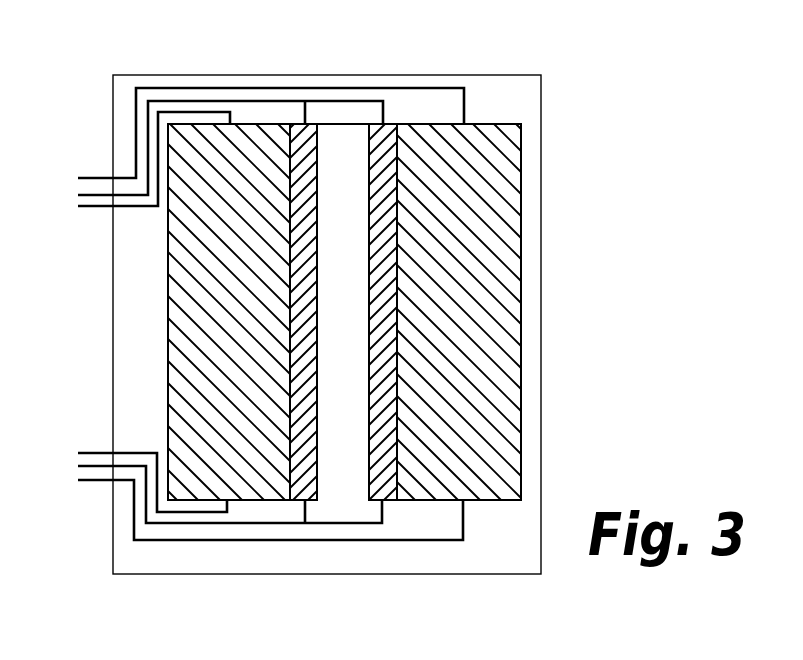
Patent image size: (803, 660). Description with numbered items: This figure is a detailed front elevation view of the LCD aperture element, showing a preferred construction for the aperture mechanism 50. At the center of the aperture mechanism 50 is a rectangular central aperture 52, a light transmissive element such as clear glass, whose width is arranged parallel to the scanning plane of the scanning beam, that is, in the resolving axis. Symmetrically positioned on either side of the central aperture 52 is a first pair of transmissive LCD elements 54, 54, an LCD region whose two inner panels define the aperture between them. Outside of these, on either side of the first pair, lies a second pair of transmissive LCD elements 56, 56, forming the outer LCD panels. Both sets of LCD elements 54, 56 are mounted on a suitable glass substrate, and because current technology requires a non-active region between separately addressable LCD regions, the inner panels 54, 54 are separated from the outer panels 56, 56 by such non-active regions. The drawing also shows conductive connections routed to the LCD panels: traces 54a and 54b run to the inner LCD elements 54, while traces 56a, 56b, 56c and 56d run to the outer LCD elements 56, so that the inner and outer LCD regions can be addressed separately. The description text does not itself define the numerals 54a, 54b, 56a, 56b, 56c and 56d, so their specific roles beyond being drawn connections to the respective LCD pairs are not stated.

The aperture mechanism 50 is at (560, 141).
The central aperture 52 is at (361, 305).
The first pair of transmissive LCD elements 54 is at (380, 204).
The electrode lead trace 54a is at (84, 469).
The electrode lead trace 54b is at (200, 100).
The second pair of transmissive LCD elements 56 is at (188, 312).
The block lead trace 56a is at (207, 542).
The block lead trace 56b is at (102, 453).
The block lead trace 56c is at (123, 177).
The block lead trace 56d is at (110, 208).